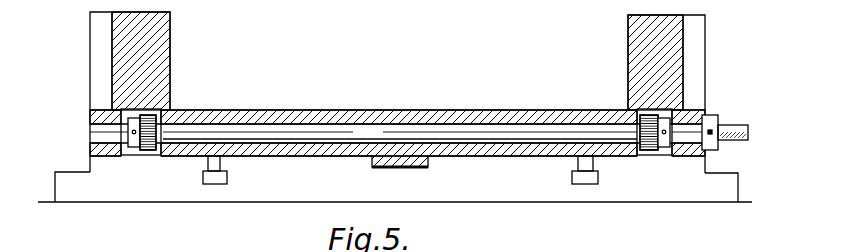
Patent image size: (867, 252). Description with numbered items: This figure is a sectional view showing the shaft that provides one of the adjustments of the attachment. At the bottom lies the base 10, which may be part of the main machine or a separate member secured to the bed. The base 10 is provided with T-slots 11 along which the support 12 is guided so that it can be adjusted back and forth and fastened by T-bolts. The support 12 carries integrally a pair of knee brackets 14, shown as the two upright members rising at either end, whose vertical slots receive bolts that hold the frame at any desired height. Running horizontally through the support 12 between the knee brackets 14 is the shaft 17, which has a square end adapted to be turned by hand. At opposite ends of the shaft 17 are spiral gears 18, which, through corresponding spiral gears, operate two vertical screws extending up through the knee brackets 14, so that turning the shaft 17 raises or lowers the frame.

The base 10 is at (528, 196).
The T-slots 11 is at (227, 178).
The support 12 is at (497, 113).
The knee brackets 14 is at (163, 53).
The shaft 17 is at (735, 127).
The spiral gears 18 is at (148, 152).